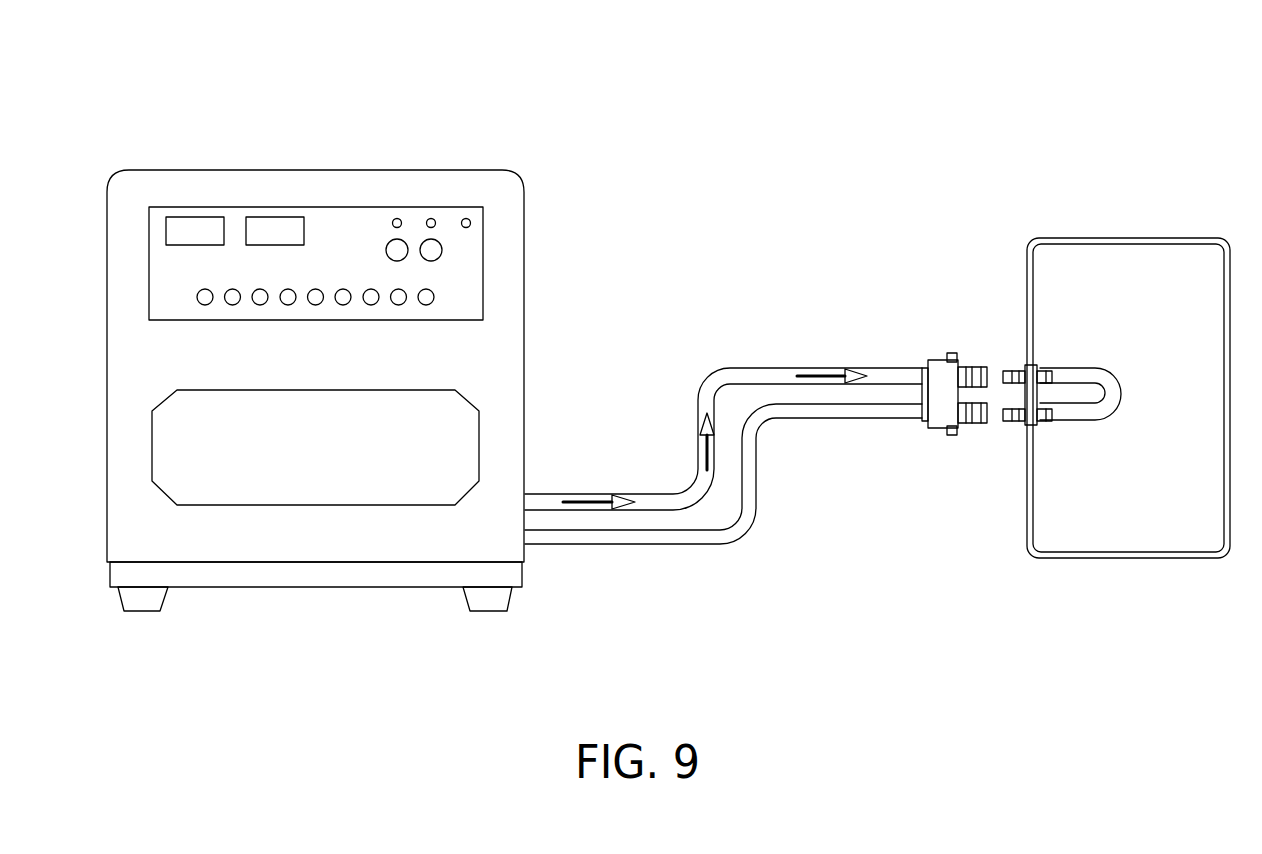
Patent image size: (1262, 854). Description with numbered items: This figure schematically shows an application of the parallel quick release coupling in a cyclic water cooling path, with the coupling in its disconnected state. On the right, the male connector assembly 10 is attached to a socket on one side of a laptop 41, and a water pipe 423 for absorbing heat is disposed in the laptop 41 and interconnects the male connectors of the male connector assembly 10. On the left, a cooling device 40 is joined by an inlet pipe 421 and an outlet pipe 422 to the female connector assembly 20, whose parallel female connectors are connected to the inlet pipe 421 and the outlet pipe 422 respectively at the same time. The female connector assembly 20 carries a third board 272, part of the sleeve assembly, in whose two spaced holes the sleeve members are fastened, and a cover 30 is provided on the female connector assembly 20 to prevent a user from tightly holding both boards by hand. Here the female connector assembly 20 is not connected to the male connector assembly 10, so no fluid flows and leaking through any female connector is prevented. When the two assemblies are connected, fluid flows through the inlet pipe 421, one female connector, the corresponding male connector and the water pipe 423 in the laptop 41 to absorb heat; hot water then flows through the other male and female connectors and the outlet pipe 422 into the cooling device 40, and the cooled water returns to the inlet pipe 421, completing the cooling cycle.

The male connector assembly 10 is at (1013, 350).
The female connector assembly 20 is at (902, 383).
The cover 30 is at (898, 367).
The cooling device 40 is at (307, 182).
The laptop 41 is at (1109, 268).
The third board 272 is at (948, 432).
The inlet pipe 421 is at (781, 367).
The outlet pipe 422 is at (812, 413).
The water pipe 423 is at (1105, 412).